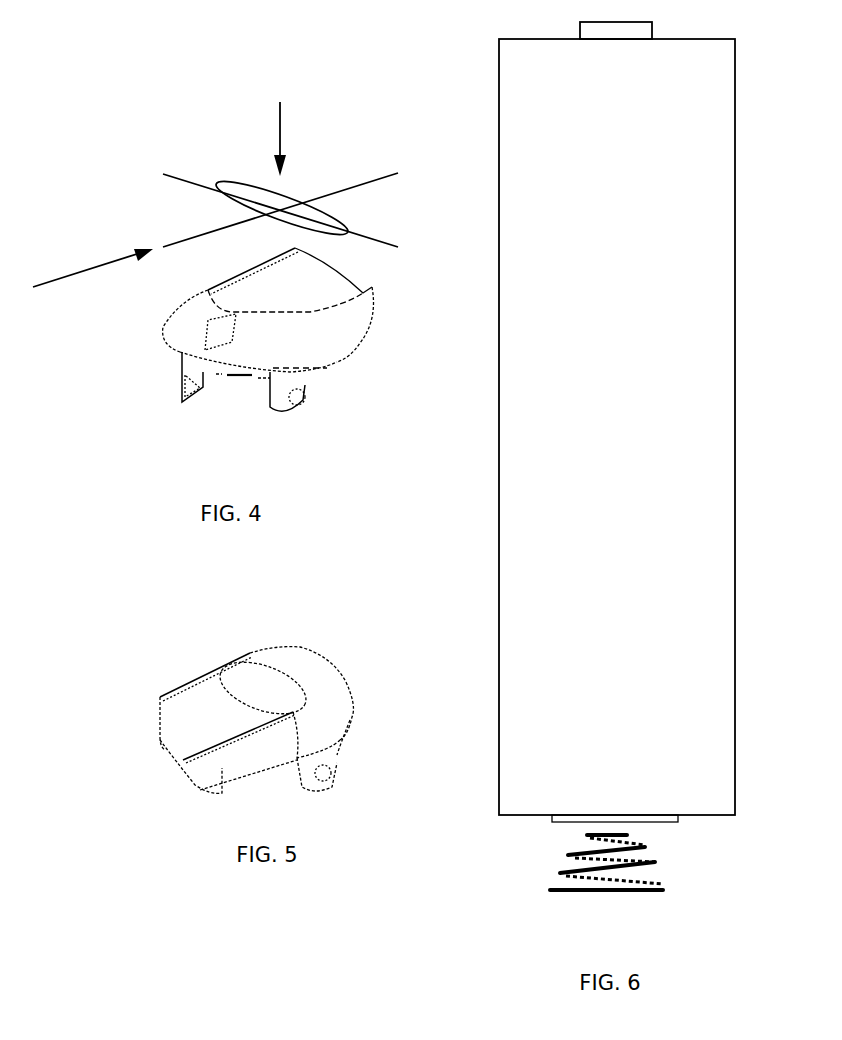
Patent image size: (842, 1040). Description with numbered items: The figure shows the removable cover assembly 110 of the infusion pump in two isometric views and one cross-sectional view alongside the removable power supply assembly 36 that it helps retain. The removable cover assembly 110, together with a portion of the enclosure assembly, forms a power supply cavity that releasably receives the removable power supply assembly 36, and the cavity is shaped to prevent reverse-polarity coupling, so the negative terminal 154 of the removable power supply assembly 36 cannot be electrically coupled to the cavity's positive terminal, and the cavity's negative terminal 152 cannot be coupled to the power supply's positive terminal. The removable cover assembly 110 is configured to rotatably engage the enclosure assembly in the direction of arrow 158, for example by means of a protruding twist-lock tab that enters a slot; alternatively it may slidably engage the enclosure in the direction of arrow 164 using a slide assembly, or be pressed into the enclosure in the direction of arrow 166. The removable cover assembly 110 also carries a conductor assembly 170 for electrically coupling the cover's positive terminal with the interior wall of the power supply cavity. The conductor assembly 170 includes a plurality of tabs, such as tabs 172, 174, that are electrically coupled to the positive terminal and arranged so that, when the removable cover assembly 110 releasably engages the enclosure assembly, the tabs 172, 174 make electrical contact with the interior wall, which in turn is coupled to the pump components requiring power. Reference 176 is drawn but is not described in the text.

In FIG. 6, the removable power supply assembly 36 is at (737, 368).
In FIG. 4, the removable cover assembly 110 is at (343, 318).
In FIG. 5, the removable cover assembly 110 is at (330, 702).
In FIG. 6, the negative terminal 152 is at (663, 882).
In FIG. 6, the negative terminal 154 is at (552, 818).
In FIG. 4, the arrow 158 is at (272, 226).
In FIG. 4, the arrow 164 is at (88, 270).
In FIG. 4, the arrow 166 is at (277, 137).
In FIG. 4, the conductor assembly 170 is at (335, 403).
In FIG. 5, the conductor assembly 170 is at (335, 755).
In FIG. 4, the tab 172 is at (180, 383).
In FIG. 4, the tab 174 is at (277, 412).
In FIG. 6, the battery terminal 176 is at (578, 33).